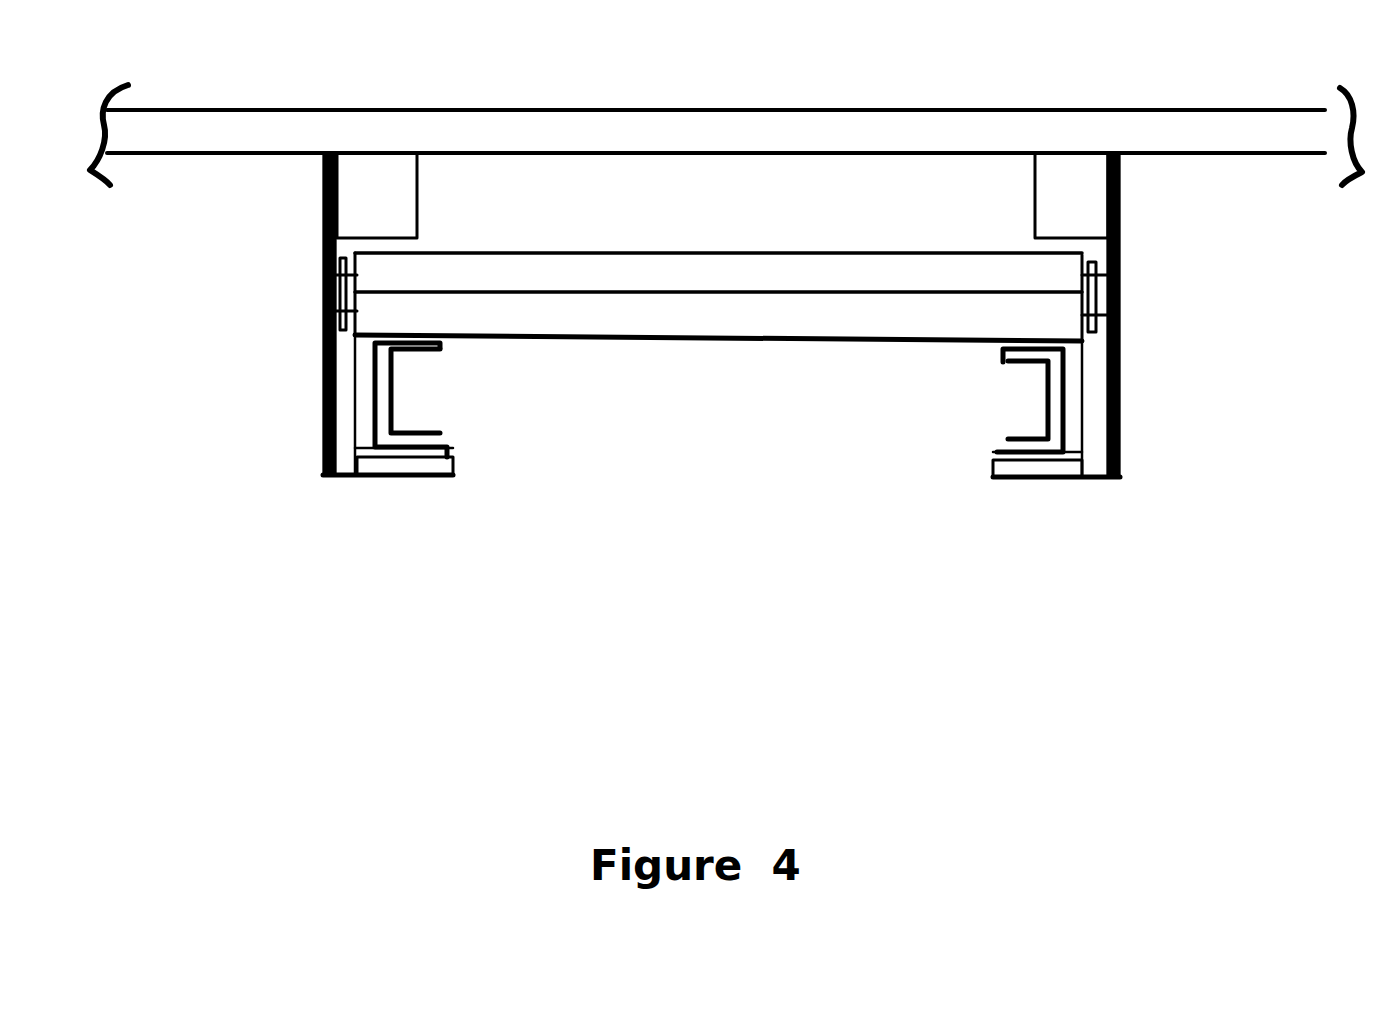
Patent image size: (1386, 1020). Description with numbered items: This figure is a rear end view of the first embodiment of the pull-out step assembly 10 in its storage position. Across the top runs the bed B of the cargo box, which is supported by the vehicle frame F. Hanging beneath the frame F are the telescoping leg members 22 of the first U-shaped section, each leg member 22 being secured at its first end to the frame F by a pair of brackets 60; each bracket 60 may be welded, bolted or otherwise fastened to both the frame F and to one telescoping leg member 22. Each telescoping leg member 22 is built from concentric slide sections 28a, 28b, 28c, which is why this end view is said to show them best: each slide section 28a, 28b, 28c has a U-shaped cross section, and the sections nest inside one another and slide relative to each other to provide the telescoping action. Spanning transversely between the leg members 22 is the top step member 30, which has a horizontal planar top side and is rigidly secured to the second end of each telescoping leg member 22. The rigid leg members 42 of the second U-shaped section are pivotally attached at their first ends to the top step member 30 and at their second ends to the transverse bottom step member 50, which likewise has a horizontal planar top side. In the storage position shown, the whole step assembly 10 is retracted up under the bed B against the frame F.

The pull-out step assembly 10 is at (795, 572).
The telescoping leg member 22 is at (372, 478).
The concentric slide section 28a is at (453, 461).
The concentric slide section 28b is at (447, 450).
The concentric slide section 28c is at (440, 434).
The transverse top step member 30 is at (800, 320).
The rigid leg member 42 is at (322, 292).
The transverse bottom step member 50 is at (640, 272).
The bracket 60 is at (323, 194).
The bed B is at (712, 128).
The vehicle frame F is at (367, 183).